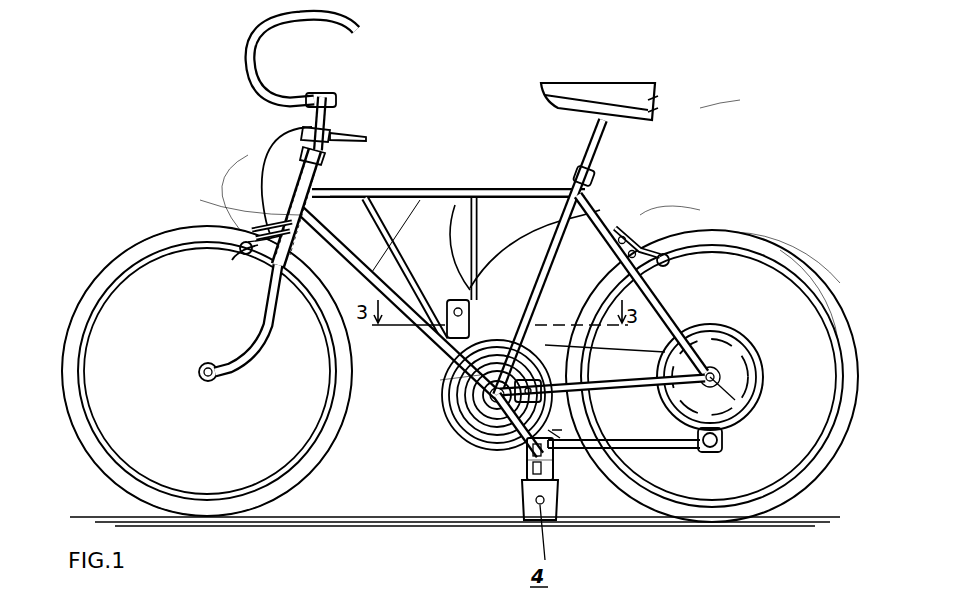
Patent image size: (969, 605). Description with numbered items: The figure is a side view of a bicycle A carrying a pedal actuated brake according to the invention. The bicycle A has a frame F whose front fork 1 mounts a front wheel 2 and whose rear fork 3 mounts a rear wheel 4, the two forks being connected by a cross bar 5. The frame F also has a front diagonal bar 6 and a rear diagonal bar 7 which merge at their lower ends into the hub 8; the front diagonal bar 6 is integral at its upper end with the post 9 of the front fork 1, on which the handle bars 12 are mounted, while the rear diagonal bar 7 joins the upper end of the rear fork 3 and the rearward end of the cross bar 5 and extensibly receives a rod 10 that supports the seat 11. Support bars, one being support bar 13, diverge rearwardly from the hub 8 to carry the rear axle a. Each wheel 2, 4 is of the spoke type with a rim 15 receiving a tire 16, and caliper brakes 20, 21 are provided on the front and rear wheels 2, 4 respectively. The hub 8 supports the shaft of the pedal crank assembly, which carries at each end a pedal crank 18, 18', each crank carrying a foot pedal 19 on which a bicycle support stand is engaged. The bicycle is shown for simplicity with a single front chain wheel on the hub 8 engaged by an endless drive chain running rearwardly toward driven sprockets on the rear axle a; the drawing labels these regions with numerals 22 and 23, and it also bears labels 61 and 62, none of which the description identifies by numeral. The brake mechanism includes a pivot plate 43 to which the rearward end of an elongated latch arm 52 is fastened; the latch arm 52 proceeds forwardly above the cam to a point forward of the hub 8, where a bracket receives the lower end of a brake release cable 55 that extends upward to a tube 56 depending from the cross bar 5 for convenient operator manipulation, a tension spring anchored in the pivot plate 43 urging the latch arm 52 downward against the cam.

The front fork 1 is at (137, 298).
The front wheel 2 is at (90, 313).
The rear fork 3 is at (768, 280).
The rear wheel 4 is at (812, 292).
The cross bar 5 is at (430, 200).
The front diagonal bar 6 is at (440, 215).
The rear diagonal bar 7 is at (600, 212).
The hub 8 is at (467, 428).
The post 9 is at (286, 185).
The rod 10 is at (600, 148).
The seat 11 is at (633, 82).
The handle bars 12 is at (243, 58).
The support bar 13 is at (640, 432).
The rim 15 is at (92, 315).
The tire 16 is at (65, 337).
The pedal crank 18 is at (513, 516).
The pedal crank 18' is at (390, 480).
The foot pedal 19 is at (520, 480).
The caliper brake 20 is at (247, 322).
The caliper brake 21 is at (707, 297).
The crank arm 22 is at (485, 440).
The drive bar 23 is at (600, 450).
The pivot plate 43 is at (565, 446).
The latch arm 52 is at (448, 418).
The brake release cable 55 is at (462, 225).
The tube 56 is at (518, 193).
The front brake 61 is at (265, 187).
The rear brake 62 is at (613, 213).
The rear axle a is at (722, 387).
The bicycle A is at (703, 110).
The frame F is at (397, 168).